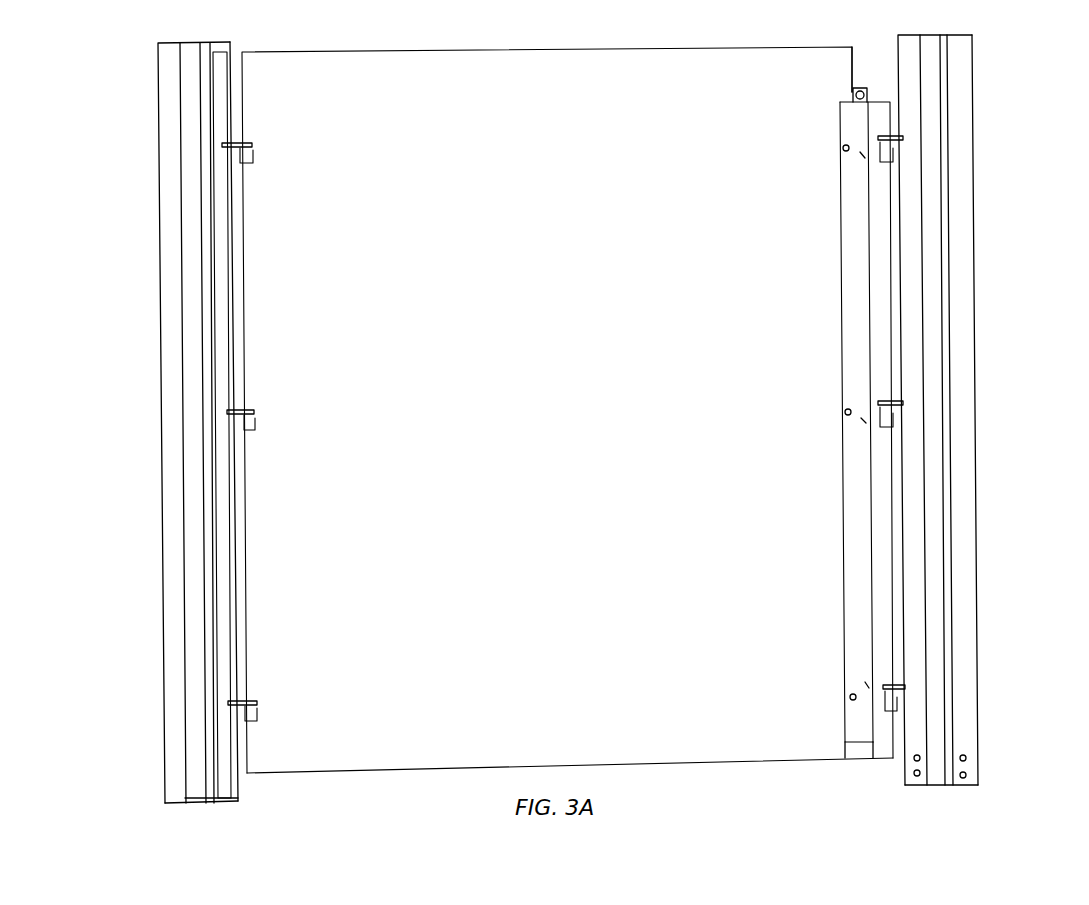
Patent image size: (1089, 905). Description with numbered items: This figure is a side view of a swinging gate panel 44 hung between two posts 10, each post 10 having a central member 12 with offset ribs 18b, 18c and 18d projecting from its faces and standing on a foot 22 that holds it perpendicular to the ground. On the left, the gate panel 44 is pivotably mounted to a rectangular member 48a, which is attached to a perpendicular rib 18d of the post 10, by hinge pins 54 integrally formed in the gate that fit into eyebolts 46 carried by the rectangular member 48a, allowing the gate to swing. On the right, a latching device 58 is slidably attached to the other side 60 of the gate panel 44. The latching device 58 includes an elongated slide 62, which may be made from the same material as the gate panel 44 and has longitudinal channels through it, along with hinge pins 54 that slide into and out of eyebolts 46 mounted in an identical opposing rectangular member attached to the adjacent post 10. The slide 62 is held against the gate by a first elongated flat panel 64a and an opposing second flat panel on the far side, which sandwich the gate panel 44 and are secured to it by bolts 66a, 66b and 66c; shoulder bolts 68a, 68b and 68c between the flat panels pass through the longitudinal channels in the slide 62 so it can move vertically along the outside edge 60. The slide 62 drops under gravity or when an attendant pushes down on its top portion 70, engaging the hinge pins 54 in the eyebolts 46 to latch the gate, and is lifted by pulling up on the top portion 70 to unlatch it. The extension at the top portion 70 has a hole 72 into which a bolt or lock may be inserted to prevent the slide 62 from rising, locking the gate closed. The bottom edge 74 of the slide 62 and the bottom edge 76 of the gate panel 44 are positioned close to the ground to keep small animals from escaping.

The post 10 is at (150, 326).
The central member 12 is at (187, 395).
The rib 18b is at (212, 801).
The rib 18c is at (170, 583).
The rib 18d is at (226, 45).
The foot 22 is at (152, 804).
The gate panel 44 is at (427, 772).
The eyebolt 46 is at (245, 143).
The rectangular member 48a is at (228, 778).
The hinge pin 54 is at (247, 163).
The latching device 58 is at (883, 276).
The other side 60 is at (852, 63).
The elongated slide 62 is at (890, 215).
The first elongated flat panel 64a is at (850, 527).
The bolt 66a is at (843, 148).
The bolt 66b is at (845, 410).
The bolt 66c is at (850, 696).
The shoulder bolt 68a is at (861, 156).
The shoulder bolt 68b is at (862, 422).
The shoulder bolt 68c is at (866, 684).
The top portion 70 is at (877, 98).
The hole 72 is at (865, 90).
The bottom edge of slide 74 is at (885, 758).
The bottom edge of gate panel 76 is at (513, 767).